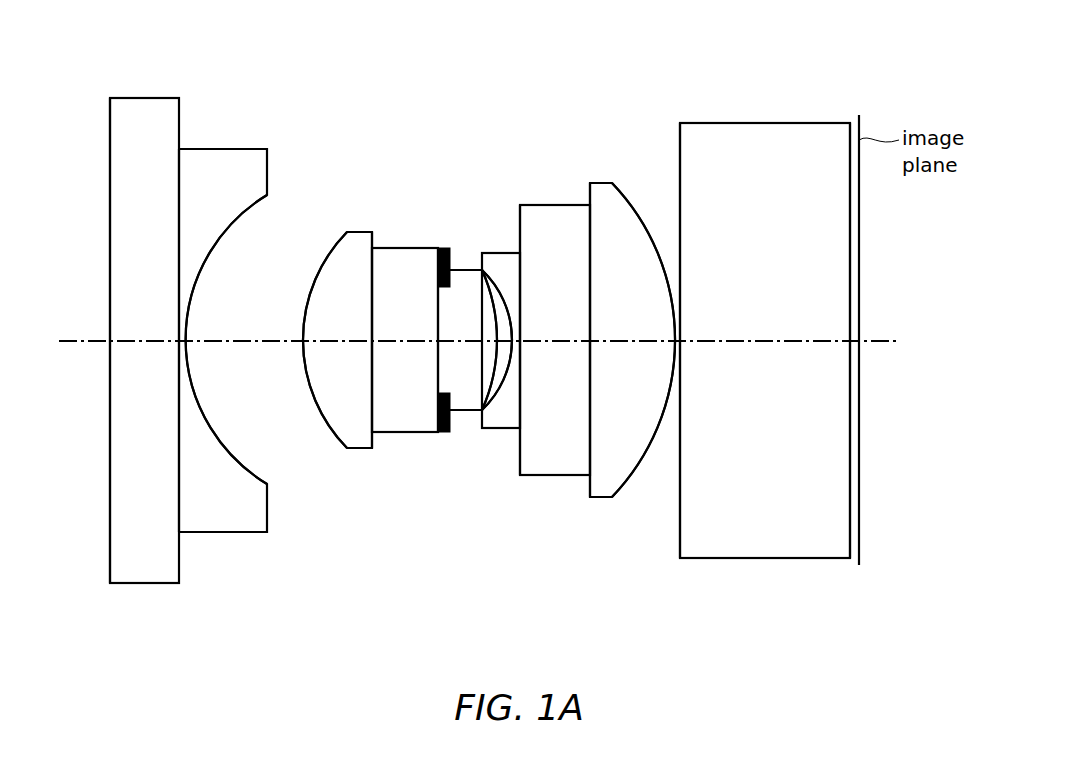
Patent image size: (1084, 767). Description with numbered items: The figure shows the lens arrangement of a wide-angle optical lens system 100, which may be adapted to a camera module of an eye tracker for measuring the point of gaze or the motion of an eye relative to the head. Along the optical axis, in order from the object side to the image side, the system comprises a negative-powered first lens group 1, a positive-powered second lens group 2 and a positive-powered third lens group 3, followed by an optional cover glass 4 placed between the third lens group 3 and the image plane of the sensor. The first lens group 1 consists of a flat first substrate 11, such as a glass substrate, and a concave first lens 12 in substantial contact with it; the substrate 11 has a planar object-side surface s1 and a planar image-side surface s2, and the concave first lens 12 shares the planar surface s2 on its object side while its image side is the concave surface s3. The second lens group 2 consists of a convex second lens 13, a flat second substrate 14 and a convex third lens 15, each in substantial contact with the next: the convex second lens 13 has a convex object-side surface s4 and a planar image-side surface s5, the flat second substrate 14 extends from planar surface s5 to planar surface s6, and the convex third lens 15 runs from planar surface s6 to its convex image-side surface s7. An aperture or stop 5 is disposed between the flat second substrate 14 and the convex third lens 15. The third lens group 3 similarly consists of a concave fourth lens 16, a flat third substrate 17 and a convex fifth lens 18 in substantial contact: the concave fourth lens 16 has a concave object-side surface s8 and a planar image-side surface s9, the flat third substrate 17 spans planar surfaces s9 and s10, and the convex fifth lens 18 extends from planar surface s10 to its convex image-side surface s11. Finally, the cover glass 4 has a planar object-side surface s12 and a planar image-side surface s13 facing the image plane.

The wide-angle optical lens system 100 is at (44, 43).
The negative-powered first lens group 1 is at (128, 648).
The flat first substrate 11 is at (145, 585).
The concave first lens 12 is at (220, 535).
The positive-powered second lens group 2 is at (478, 515).
The convex second lens 13 is at (355, 450).
The flat second substrate 14 is at (405, 434).
The convex third lens 15 is at (457, 415).
The aperture 5 is at (442, 247).
The positive-powered third lens group 3 is at (617, 567).
The concave fourth lens 16 is at (495, 430).
The flat third substrate 17 is at (543, 477).
The convex fifth lens 18 is at (595, 499).
The cover glass 4 is at (758, 560).
The planar object-side surface s1 is at (110, 128).
The planar image-side surface s2 is at (182, 212).
The concave image-side surface s3 is at (243, 227).
The convex object-side surface s4 is at (338, 242).
The planar image-side surface s5 is at (375, 270).
The planar image-side surface s6 is at (436, 302).
The convex image-side surface s7 is at (484, 290).
The concave object-side surface s8 is at (506, 283).
The planar image-side surface s9 is at (523, 277).
The planar image-side surface s10 is at (588, 237).
The convex image-side surface s11 is at (635, 207).
The planar object-side surface s12 is at (680, 497).
The planar image-side surface s13 is at (850, 443).